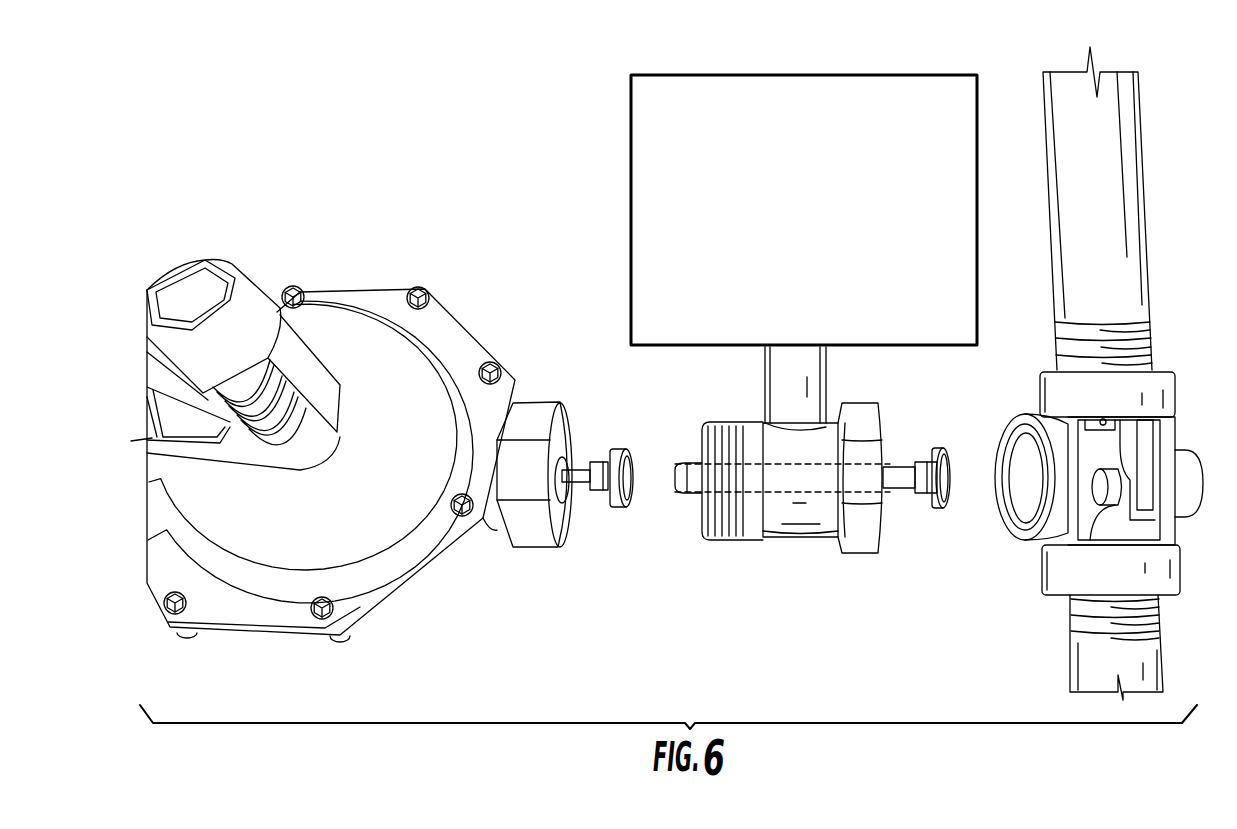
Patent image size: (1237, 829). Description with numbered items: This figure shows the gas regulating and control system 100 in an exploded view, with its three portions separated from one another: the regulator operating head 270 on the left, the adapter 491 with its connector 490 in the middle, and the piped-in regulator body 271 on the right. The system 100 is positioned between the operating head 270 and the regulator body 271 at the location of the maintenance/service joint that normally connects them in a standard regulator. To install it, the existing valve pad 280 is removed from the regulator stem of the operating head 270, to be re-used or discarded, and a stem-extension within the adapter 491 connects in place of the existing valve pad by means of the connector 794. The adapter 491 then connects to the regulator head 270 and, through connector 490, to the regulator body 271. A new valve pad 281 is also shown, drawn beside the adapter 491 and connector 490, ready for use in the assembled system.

The gas regulating and control system 100 is at (788, 250).
The operating head 270 is at (400, 487).
The regulator body 271 is at (1082, 568).
The existing valve pad 280 is at (618, 508).
The new valve pad 281 is at (940, 510).
The connector 490 is at (863, 488).
The adapter 491 is at (793, 515).
The connector 794 is at (690, 485).